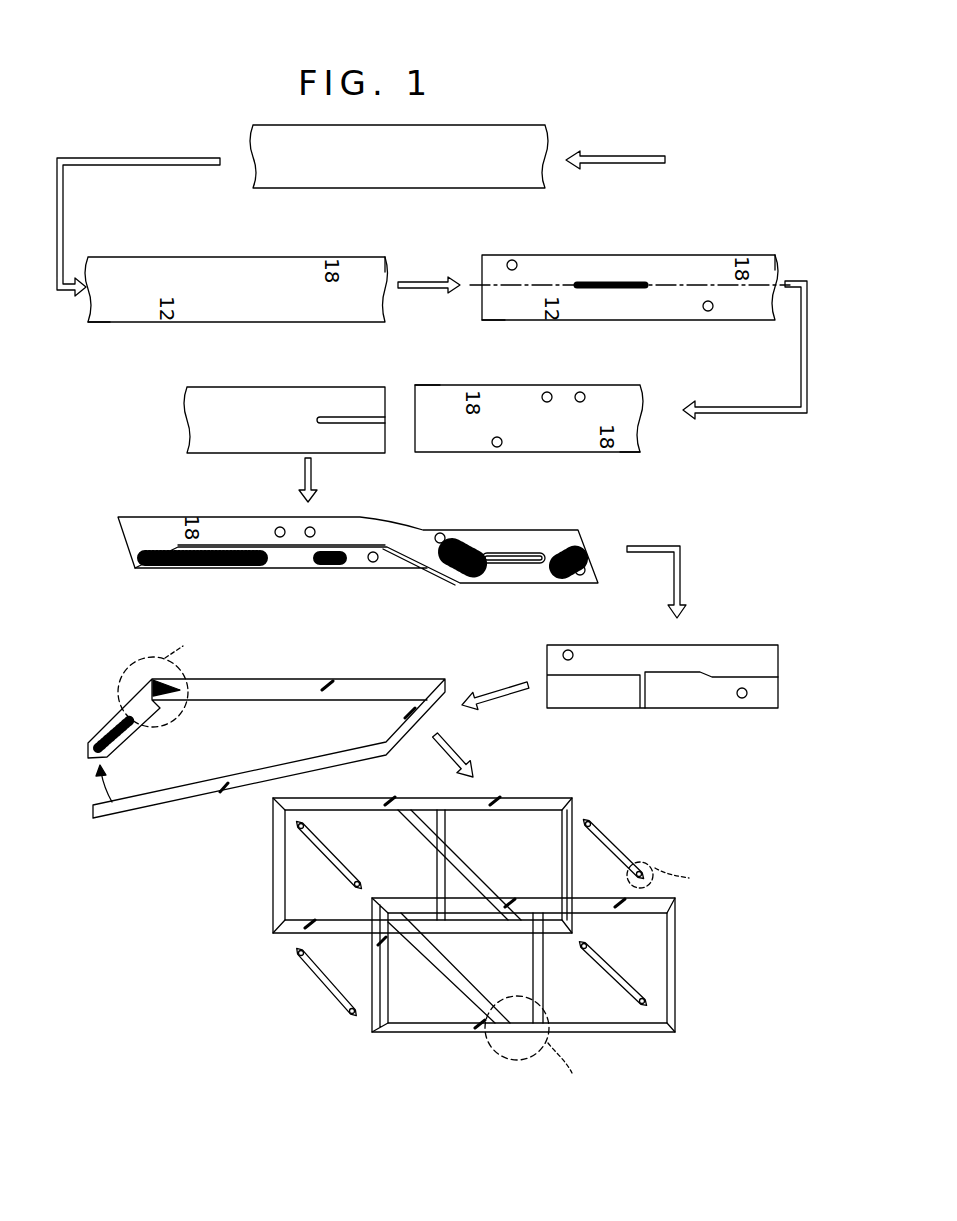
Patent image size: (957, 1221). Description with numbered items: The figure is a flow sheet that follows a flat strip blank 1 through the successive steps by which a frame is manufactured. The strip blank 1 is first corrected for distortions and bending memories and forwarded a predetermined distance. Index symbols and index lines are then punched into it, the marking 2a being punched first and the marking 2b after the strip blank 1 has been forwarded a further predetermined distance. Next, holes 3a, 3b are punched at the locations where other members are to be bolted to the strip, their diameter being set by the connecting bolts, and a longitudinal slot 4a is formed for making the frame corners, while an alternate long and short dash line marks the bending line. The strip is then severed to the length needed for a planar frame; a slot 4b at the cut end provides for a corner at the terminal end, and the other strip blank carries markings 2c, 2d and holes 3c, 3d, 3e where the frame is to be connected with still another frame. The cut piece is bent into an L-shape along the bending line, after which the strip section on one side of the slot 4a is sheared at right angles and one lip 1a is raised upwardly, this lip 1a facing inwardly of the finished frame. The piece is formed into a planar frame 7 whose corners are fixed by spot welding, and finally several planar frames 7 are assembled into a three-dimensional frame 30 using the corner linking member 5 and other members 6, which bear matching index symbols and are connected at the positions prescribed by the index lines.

The flat strip blank 1 is at (496, 132).
The lip 1a is at (672, 690).
The marking 2a is at (336, 266).
The marking 2b is at (160, 322).
The marking 2c is at (462, 394).
The marking 2d is at (616, 436).
The hole 3a is at (514, 260).
The hole 3b is at (708, 311).
The hole 3c is at (552, 394).
The hole 3d is at (593, 395).
The hole 3e is at (497, 447).
The slot 4a is at (607, 282).
The slot 4b is at (359, 415).
The corner linking member 5 is at (336, 856).
The member 6 is at (465, 857).
The planar frame 7 is at (310, 680).
The three-dimensional frame 30 is at (506, 797).